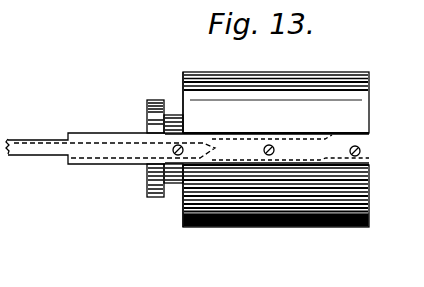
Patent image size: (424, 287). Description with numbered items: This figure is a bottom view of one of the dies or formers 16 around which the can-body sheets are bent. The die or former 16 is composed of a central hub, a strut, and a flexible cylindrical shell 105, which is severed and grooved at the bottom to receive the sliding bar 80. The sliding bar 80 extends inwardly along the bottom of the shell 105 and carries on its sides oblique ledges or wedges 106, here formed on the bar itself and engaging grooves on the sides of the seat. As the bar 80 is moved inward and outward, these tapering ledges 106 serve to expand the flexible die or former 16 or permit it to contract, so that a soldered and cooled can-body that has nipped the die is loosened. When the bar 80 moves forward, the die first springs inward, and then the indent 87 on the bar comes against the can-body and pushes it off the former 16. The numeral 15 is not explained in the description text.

The end wall of casing 15 is at (172, 140).
The dies or formers 16 is at (297, 73).
The sliding bar 80 is at (36, 140).
The indent 87 is at (162, 148).
The flexible cylindrical shell 105 is at (174, 202).
The oblique ledges or wedges 106 is at (379, 125).